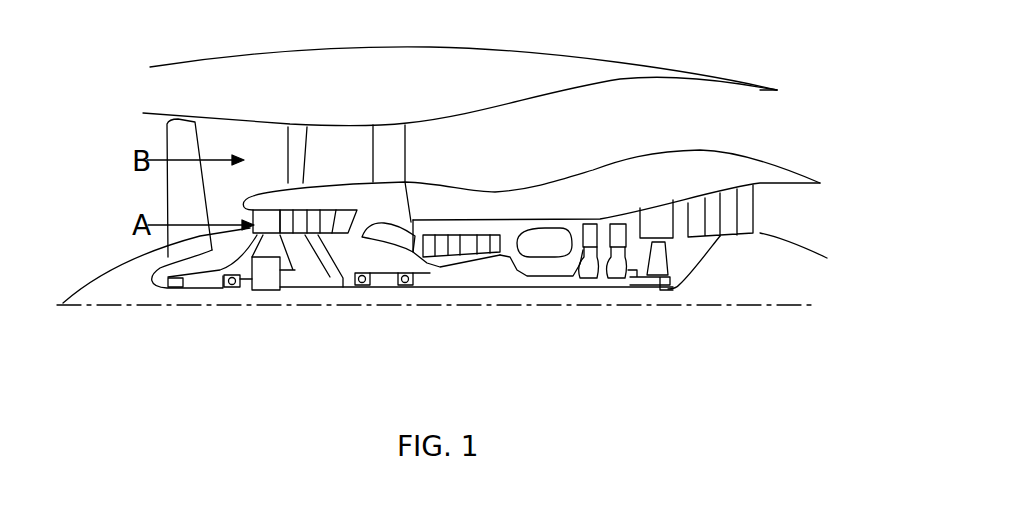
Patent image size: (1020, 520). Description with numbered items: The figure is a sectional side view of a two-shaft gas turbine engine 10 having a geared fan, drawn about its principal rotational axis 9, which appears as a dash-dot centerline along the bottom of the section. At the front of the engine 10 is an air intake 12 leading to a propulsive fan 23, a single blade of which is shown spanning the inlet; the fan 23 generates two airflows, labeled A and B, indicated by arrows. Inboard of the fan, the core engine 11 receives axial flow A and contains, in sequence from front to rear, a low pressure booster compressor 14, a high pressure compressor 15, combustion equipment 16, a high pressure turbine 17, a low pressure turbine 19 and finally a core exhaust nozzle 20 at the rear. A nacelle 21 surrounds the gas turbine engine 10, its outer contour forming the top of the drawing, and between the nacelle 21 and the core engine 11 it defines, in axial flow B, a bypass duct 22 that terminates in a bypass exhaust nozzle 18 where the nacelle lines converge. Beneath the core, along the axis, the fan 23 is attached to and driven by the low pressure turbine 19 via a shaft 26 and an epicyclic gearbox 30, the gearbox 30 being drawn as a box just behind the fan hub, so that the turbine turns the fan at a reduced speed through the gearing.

The principal rotational axis 9 is at (773, 307).
The gas turbine engine 10 is at (146, 64).
The core engine 11 is at (531, 206).
The air intake 12 is at (137, 133).
The low pressure booster compressor 14 is at (330, 213).
The high pressure compressor 15 is at (470, 240).
The combustion equipment 16 is at (544, 248).
The high pressure turbine 17 is at (603, 230).
The bypass exhaust nozzle 18 is at (770, 99).
The low pressure turbine 19 is at (730, 205).
The core exhaust nozzle 20 is at (820, 218).
The nacelle 21 is at (438, 70).
The bypass duct 22 is at (654, 119).
The propulsive fan 23 is at (172, 199).
The shaft 26 is at (487, 290).
The epicyclic gearbox 30 is at (266, 287).